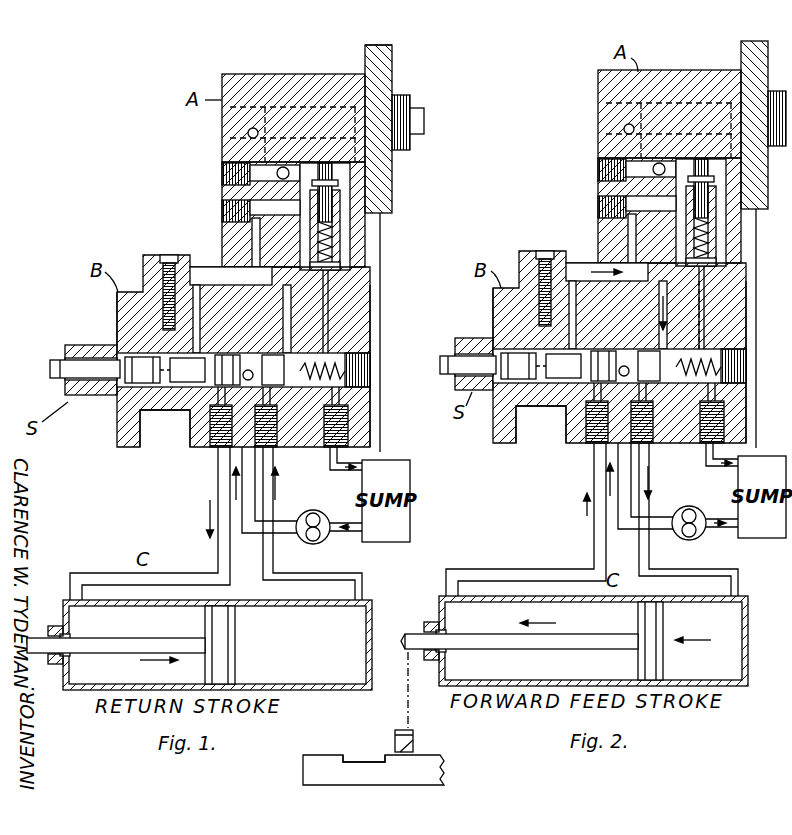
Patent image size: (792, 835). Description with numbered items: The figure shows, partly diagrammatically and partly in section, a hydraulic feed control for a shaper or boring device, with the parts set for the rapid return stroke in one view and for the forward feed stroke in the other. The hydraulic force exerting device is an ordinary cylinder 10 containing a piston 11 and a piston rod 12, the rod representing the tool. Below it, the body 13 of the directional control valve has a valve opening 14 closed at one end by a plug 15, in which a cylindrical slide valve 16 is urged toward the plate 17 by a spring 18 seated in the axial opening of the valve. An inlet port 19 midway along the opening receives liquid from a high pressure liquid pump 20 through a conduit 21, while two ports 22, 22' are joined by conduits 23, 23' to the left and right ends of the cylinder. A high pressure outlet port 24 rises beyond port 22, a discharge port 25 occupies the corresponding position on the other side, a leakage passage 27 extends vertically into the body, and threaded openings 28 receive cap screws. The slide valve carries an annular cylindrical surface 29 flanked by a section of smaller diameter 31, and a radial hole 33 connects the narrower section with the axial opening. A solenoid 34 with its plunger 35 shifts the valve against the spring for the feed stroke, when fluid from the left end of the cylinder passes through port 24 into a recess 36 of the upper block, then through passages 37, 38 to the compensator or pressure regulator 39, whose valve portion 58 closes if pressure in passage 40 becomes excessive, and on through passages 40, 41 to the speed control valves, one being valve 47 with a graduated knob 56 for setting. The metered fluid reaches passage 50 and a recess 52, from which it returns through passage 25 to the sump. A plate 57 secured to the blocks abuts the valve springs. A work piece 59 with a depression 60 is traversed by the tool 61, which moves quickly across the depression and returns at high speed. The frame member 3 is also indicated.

In FIG. 1, the machine frame plate 3 is at (366, 33).
In FIG. 2, the machine frame plate 3 is at (766, 234).
In FIG. 1, the cylinder 10 is at (312, 690).
In FIG. 2, the cylinder 10 is at (610, 641).
In FIG. 1, the piston 11 is at (232, 651).
In FIG. 2, the piston 11 is at (674, 641).
In FIG. 1, the piston rod 12 is at (141, 642).
In FIG. 2, the piston rod 12 is at (519, 644).
In FIG. 1, the body 13 is at (356, 313).
In FIG. 2, the body 13 is at (764, 362).
In FIG. 1, the valve opening 14 is at (335, 357).
In FIG. 2, the valve opening 14 is at (705, 350).
In FIG. 1, the plug 15 is at (371, 372).
In FIG. 2, the plug 15 is at (756, 362).
In FIG. 1, the cylindrical slide valve 16 is at (135, 386).
In FIG. 2, the cylindrical slide valve 16 is at (541, 400).
In FIG. 1, the plate 17 is at (117, 318).
In FIG. 2, the plate 17 is at (472, 314).
In FIG. 1, the spring 18 is at (348, 368).
In FIG. 2, the spring 18 is at (687, 416).
In FIG. 1, the inlet port 19 is at (165, 428).
In FIG. 2, the inlet port 19 is at (542, 424).
In FIG. 1, the high pressure liquid pump 20 is at (322, 532).
In FIG. 2, the high pressure liquid pump 20 is at (704, 532).
In FIG. 1, the conduit 21 is at (250, 534).
In FIG. 2, the conduit 21 is at (644, 486).
In FIG. 1, the port 22 is at (225, 434).
In FIG. 2, the port 22 is at (596, 428).
In FIG. 1, the port 22' is at (323, 466).
In FIG. 2, the port 22' is at (644, 469).
In FIG. 1, the conduit 23 is at (150, 523).
In FIG. 2, the conduit 23 is at (526, 519).
In FIG. 1, the conduit 23' is at (312, 523).
In FIG. 2, the conduit 23' is at (708, 519).
In FIG. 1, the high pressure outlet port 24 is at (252, 240).
In FIG. 2, the high pressure outlet port 24 is at (590, 239).
In FIG. 1, the discharge port 25 is at (292, 302).
In FIG. 2, the discharge port 25 is at (725, 315).
In FIG. 2, the leakage passage 27 is at (745, 312).
In FIG. 1, the threaded opening 28 is at (165, 278).
In FIG. 2, the threaded opening 28 is at (545, 288).
In FIG. 1, the annular cylindrical surface 29 is at (218, 395).
In FIG. 2, the annular cylindrical surface 29 is at (554, 428).
In FIG. 1, the section of smaller diameter 31 is at (165, 390).
In FIG. 2, the section of smaller diameter 31 is at (603, 366).
In FIG. 1, the radial hole 33 is at (338, 398).
In FIG. 2, the radial hole 33 is at (712, 413).
In FIG. 1, the solenoid 34 is at (70, 392).
In FIG. 2, the solenoid 34 is at (466, 354).
In FIG. 1, the plunger 35 is at (58, 364).
In FIG. 2, the plunger 35 is at (468, 401).
In FIG. 1, the recess 36 is at (231, 309).
In FIG. 2, the recess 36 is at (607, 286).
In FIG. 1, the passage 37 is at (240, 228).
In FIG. 2, the passage 37 is at (613, 210).
In FIG. 1, the passage 38 is at (232, 190).
In FIG. 2, the passage 38 is at (653, 210).
In FIG. 1, the compensator or pressure regulator 39 is at (351, 224).
In FIG. 2, the compensator or pressure regulator 39 is at (734, 212).
In FIG. 1, the passage 40 is at (225, 166).
In FIG. 2, the passage 40 is at (651, 107).
In FIG. 1, the passage 41 is at (277, 170).
In FIG. 2, the passage 41 is at (608, 143).
In FIG. 1, the speed control valve 47 is at (425, 118).
In FIG. 2, the passage 50 is at (601, 109).
In FIG. 1, the recess 52 is at (330, 273).
In FIG. 2, the recess 52 is at (745, 298).
In FIG. 1, the knob 56 is at (410, 98).
In FIG. 1, the plate 57 is at (390, 63).
In FIG. 1, the valve portion 58 is at (340, 183).
In FIG. 2, the valve portion 58 is at (740, 172).
In FIG. 2, the work piece 59 is at (445, 770).
In FIG. 2, the depression 60 is at (358, 760).
In FIG. 2, the tool 61 is at (414, 740).